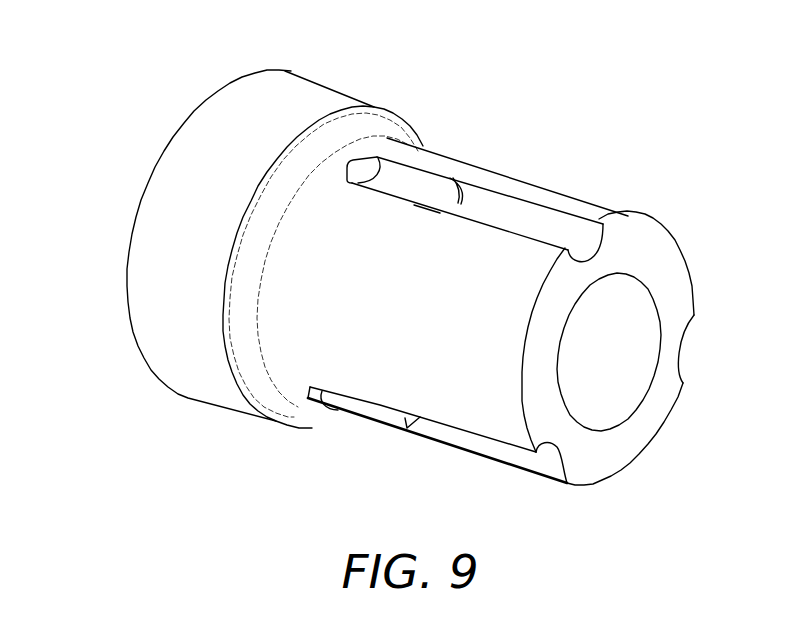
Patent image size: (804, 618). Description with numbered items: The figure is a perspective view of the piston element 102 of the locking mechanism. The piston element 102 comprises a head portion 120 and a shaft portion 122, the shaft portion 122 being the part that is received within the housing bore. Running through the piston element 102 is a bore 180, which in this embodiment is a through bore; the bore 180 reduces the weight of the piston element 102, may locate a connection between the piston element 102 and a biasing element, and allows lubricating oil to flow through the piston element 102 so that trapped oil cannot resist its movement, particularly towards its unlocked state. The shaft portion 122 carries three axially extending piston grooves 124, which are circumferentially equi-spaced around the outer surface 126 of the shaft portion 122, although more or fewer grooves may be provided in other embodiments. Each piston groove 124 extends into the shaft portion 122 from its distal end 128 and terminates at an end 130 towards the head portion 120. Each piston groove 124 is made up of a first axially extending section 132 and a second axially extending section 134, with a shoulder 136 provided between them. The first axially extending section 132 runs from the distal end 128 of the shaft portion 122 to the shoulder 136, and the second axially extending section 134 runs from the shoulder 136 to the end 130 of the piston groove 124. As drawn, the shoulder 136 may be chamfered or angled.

The piston element 102 is at (210, 448).
The head portion 120 is at (285, 83).
The shaft portion 122 is at (651, 218).
The piston grooves 124 is at (526, 220).
The outer surface 126 is at (323, 277).
The distal end 128 is at (663, 403).
The end 130 is at (363, 167).
The first axially extending section 132 is at (586, 243).
The second axially extending section 134 is at (407, 177).
The shoulder 136 is at (462, 179).
The bore 180 is at (617, 400).